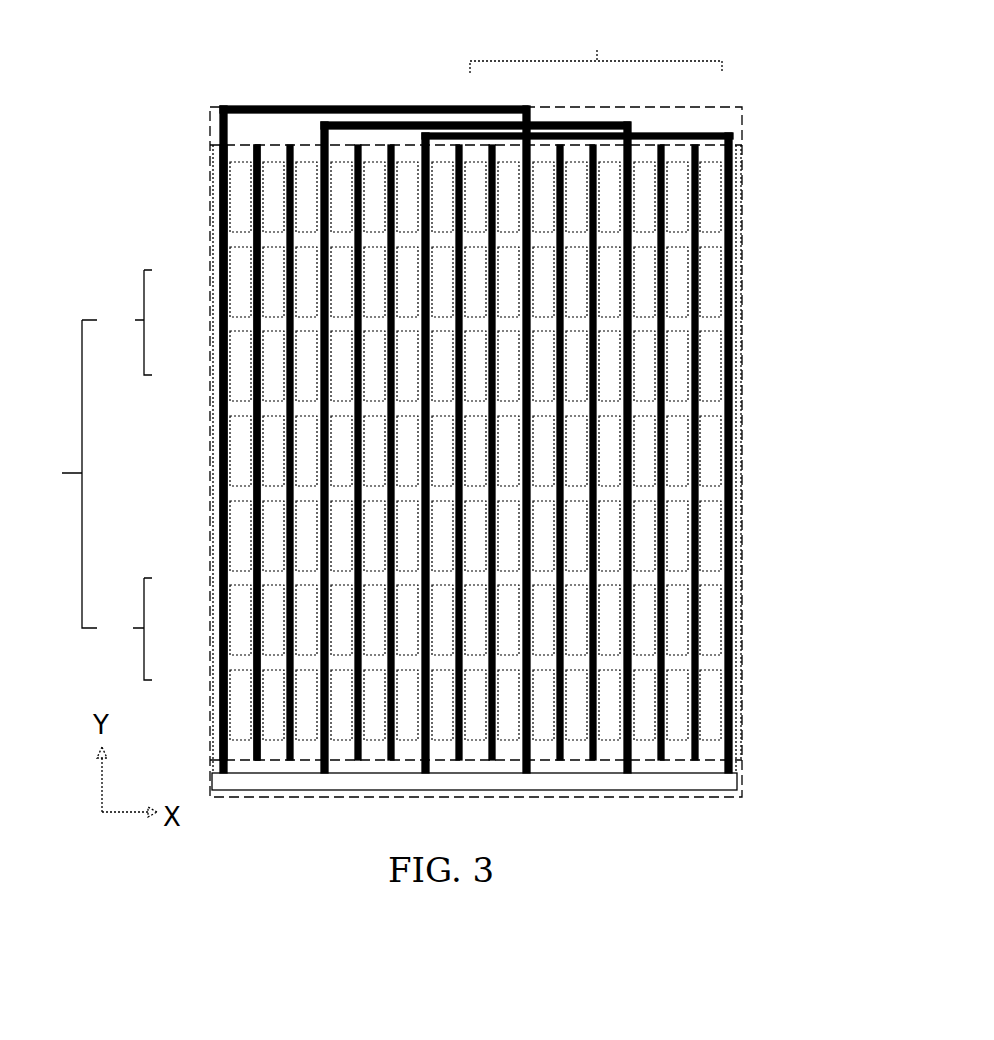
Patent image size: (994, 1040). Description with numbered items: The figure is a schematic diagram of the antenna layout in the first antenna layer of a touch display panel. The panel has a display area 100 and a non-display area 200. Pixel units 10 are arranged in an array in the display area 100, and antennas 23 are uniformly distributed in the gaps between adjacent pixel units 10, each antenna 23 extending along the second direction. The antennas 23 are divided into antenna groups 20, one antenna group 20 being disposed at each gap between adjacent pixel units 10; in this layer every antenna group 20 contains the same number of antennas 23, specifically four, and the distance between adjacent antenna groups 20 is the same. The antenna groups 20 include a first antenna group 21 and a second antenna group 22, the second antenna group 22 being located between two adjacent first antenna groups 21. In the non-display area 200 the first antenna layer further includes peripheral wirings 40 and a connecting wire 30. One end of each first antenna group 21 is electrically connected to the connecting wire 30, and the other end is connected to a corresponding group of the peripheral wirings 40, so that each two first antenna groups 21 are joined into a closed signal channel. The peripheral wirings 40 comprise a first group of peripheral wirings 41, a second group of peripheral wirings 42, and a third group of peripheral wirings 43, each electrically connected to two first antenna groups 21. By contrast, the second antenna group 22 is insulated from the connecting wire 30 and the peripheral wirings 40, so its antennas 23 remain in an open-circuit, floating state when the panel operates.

The pixel unit 10 is at (730, 220).
The antenna group 20 is at (378, 439).
The first antenna group 21 is at (415, 439).
The second antenna group 22 is at (397, 452).
The antenna 23 is at (258, 278).
The connecting wire 30 is at (717, 790).
The peripheral wirings 40 is at (479, 79).
The first group of peripheral wirings 41 is at (418, 107).
The second group of peripheral wirings 42 is at (555, 123).
The third group of peripheral wirings 43 is at (665, 133).
The display area 100 is at (741, 350).
The non-display area 200 is at (745, 117).